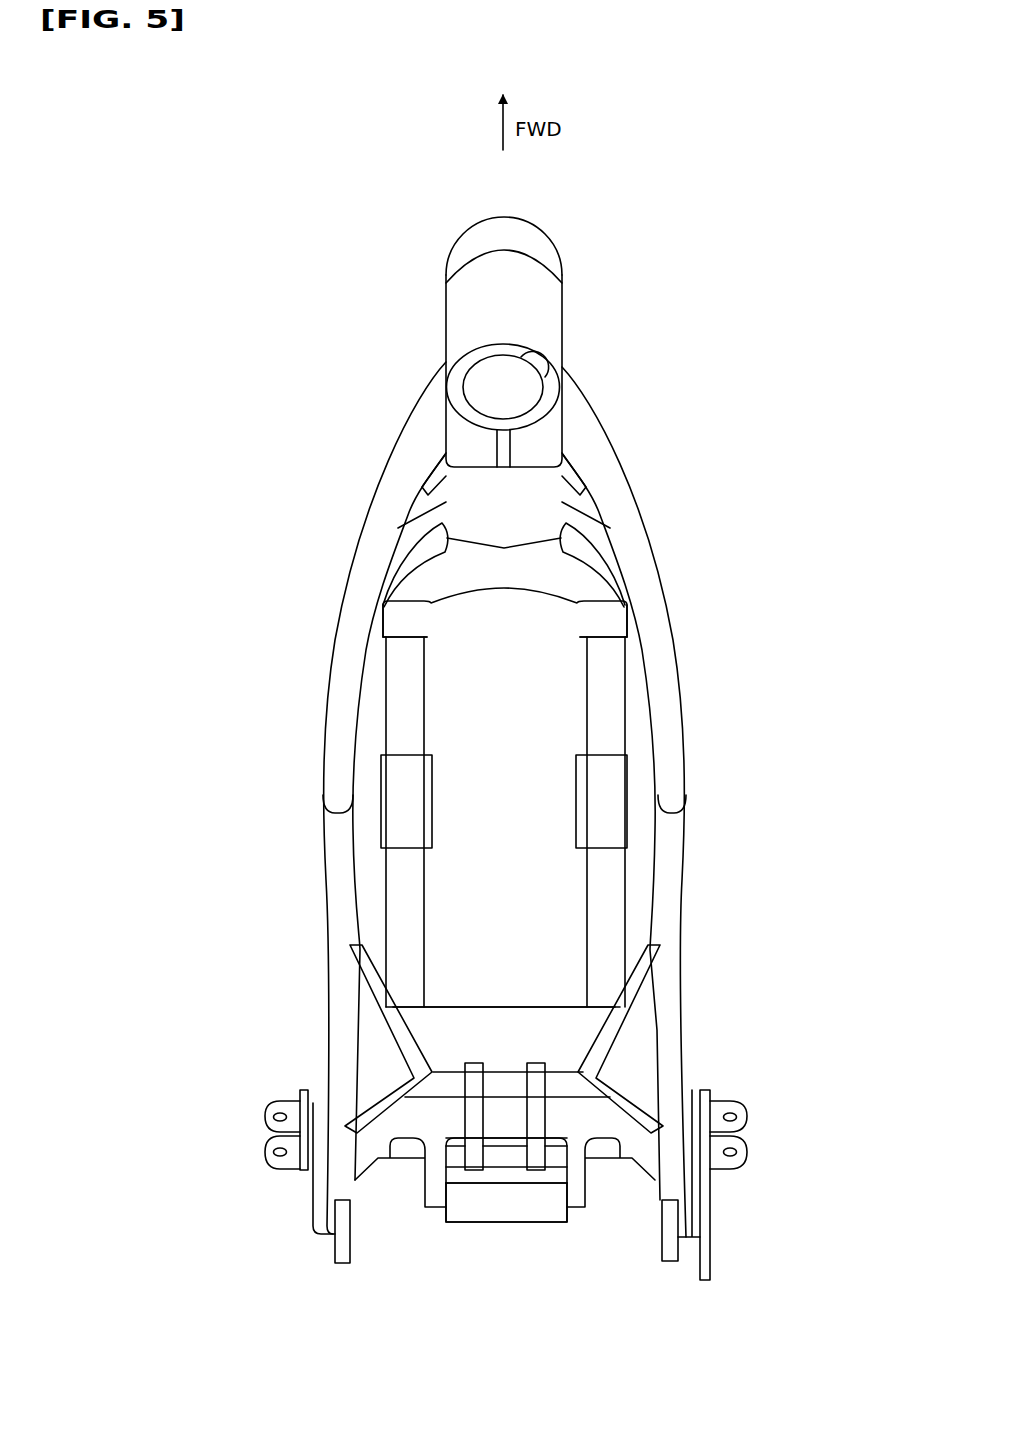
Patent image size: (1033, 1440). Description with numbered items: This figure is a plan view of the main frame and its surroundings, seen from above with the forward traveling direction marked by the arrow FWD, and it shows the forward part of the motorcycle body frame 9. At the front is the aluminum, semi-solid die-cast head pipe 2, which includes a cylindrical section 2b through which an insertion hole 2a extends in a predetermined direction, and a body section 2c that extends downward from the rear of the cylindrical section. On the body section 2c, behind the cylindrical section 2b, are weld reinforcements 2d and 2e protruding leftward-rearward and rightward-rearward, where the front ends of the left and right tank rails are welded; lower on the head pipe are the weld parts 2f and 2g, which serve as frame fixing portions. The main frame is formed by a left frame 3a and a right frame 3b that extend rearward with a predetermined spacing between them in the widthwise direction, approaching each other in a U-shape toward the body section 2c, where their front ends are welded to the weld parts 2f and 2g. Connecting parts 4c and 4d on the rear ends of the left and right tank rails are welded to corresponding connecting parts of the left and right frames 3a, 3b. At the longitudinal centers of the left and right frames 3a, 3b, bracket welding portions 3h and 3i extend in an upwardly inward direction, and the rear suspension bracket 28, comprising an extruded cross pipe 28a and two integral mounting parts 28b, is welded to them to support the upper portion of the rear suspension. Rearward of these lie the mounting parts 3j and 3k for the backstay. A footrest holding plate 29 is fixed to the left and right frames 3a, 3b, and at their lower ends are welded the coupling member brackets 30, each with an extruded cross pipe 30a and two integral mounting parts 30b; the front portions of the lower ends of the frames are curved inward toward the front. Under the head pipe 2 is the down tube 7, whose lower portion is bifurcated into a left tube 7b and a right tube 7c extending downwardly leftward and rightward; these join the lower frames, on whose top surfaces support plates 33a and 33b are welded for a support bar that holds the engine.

The head pipe 2 is at (463, 327).
The insertion hole 2a is at (537, 378).
The cylindrical section 2b is at (558, 317).
The body section 2c is at (532, 523).
The weld reinforcement 2d is at (425, 478).
The weld reinforcement 2e is at (575, 478).
The weld part 2f is at (406, 520).
The weld part 2g is at (595, 528).
The left frame 3a is at (333, 832).
The right frame 3b is at (677, 832).
The bracket welding portion 3h is at (373, 1048).
The bracket welding portion 3i is at (615, 1065).
The mounting part 3j is at (337, 1257).
The mounting part 3k is at (682, 1262).
The connecting part 4c is at (333, 778).
The connecting part 4d is at (670, 785).
The down tube 7 is at (598, 595).
The left tube 7b is at (395, 615).
The right tube 7c is at (603, 627).
The body frame 9 is at (772, 639).
The rear suspension bracket 28 is at (513, 1030).
The cross pipe 28a is at (457, 1030).
The mounting parts 28b is at (468, 1110).
The footrest holding plate 29 is at (267, 1100).
The coupling member bracket 30 is at (595, 1125).
The cross pipe 30a is at (520, 1130).
The mounting parts 30b is at (476, 1170).
The support plate 33a is at (400, 758).
The support plate 33b is at (612, 758).